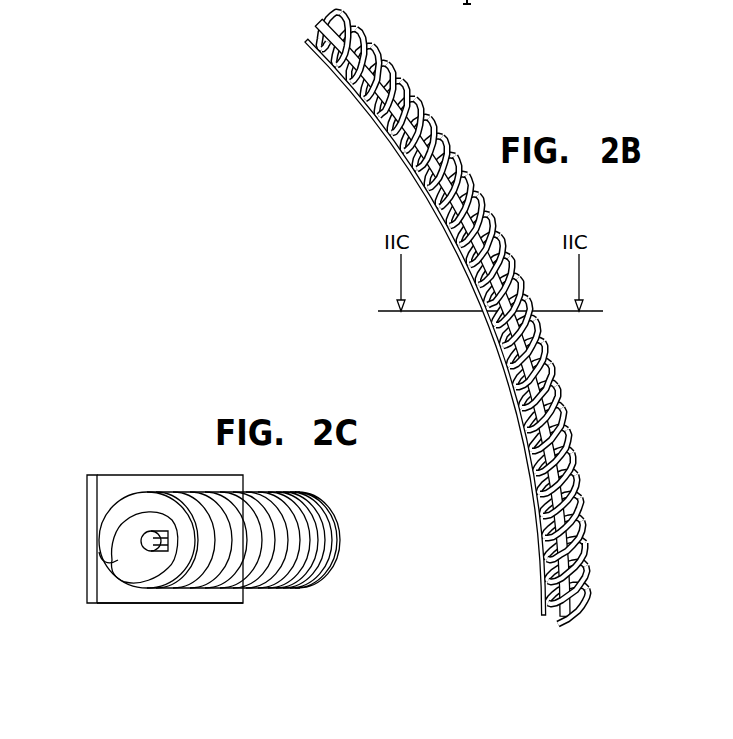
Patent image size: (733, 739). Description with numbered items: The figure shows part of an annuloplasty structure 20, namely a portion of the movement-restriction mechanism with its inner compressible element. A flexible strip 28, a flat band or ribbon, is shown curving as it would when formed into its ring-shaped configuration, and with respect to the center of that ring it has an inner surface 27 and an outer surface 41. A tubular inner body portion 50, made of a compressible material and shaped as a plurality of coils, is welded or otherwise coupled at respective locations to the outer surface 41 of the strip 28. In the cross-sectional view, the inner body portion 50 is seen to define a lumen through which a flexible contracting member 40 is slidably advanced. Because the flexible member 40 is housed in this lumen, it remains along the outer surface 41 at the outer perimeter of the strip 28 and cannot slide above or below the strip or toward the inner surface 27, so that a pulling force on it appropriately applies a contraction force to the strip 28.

In FIG. 2B, the annuloplasty structure 20 is at (264, 81).
In FIG. 2C, the annuloplasty structure 20 is at (127, 403).
In FIG. 2C, the inner surface 27 is at (87, 516).
In FIG. 2B, the flexible strip 28 is at (537, 611).
In FIG. 2C, the flexible strip 28 is at (177, 603).
In FIG. 2B, the flexible contracting member 40 is at (568, 618).
In FIG. 2C, the flexible contracting member 40 is at (152, 542).
In FIG. 2C, the outer surface 41 is at (117, 494).
In FIG. 2B, the inner body portion 50 is at (596, 571).
In FIG. 2C, the inner body portion 50 is at (193, 556).